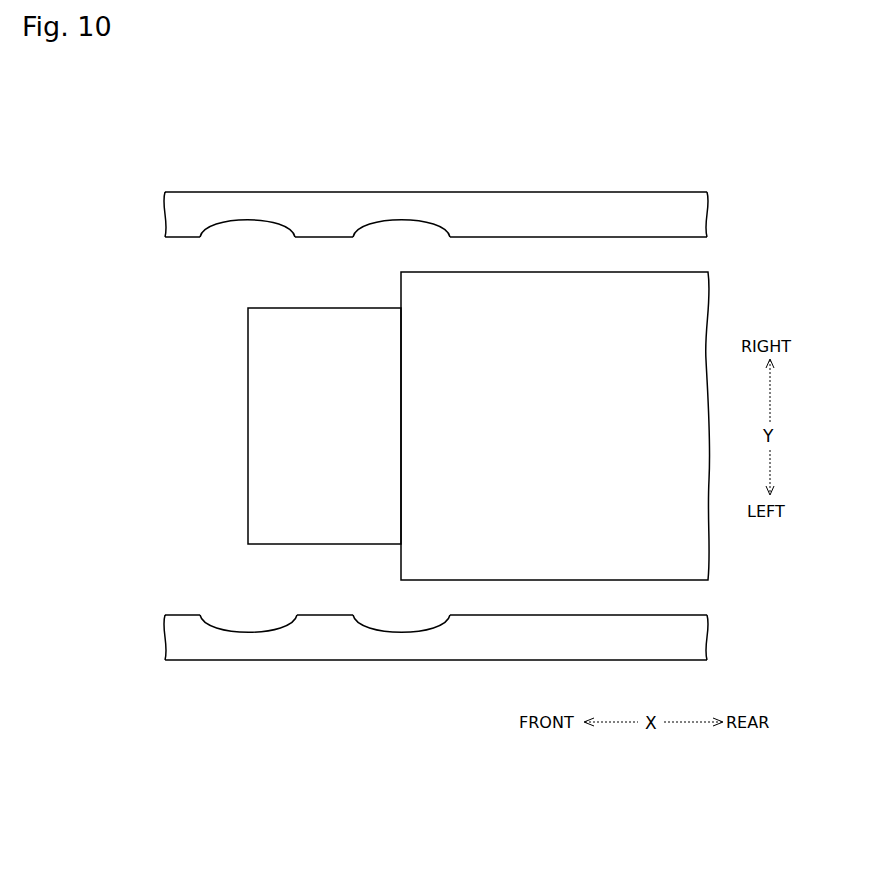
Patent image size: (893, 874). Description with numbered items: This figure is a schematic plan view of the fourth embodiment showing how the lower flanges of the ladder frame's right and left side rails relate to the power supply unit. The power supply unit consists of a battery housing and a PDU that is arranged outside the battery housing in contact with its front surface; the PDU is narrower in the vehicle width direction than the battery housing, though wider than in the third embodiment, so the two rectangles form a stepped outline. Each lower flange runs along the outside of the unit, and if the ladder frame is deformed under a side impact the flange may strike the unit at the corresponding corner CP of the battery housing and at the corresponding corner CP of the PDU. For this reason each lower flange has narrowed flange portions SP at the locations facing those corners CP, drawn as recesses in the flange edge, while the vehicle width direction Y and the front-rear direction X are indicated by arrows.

The spring portion SP is at (248, 200).
The corner CP is at (396, 270).